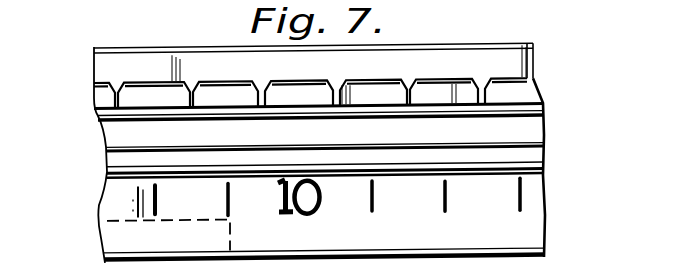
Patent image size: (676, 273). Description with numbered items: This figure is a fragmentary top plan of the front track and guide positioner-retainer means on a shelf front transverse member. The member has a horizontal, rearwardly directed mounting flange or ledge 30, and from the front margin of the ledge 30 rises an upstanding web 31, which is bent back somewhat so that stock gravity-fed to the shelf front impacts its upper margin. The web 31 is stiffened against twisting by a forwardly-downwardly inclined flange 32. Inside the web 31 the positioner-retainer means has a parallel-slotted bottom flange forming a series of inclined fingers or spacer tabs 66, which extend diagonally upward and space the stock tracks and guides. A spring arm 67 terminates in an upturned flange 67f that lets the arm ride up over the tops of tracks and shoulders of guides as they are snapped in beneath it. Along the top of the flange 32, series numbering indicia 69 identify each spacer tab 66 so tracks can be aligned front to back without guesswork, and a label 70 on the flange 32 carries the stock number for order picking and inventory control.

The mounting flange or ledge 30 is at (188, 47).
The spacer tabs 66 is at (157, 97).
The upturned flange 67f is at (100, 118).
The spring arm 67 is at (117, 137).
The upstanding web 31 is at (122, 163).
The inclined flange 32 is at (118, 204).
The series numbering indicia 69 is at (370, 192).
The labels 70 is at (118, 243).